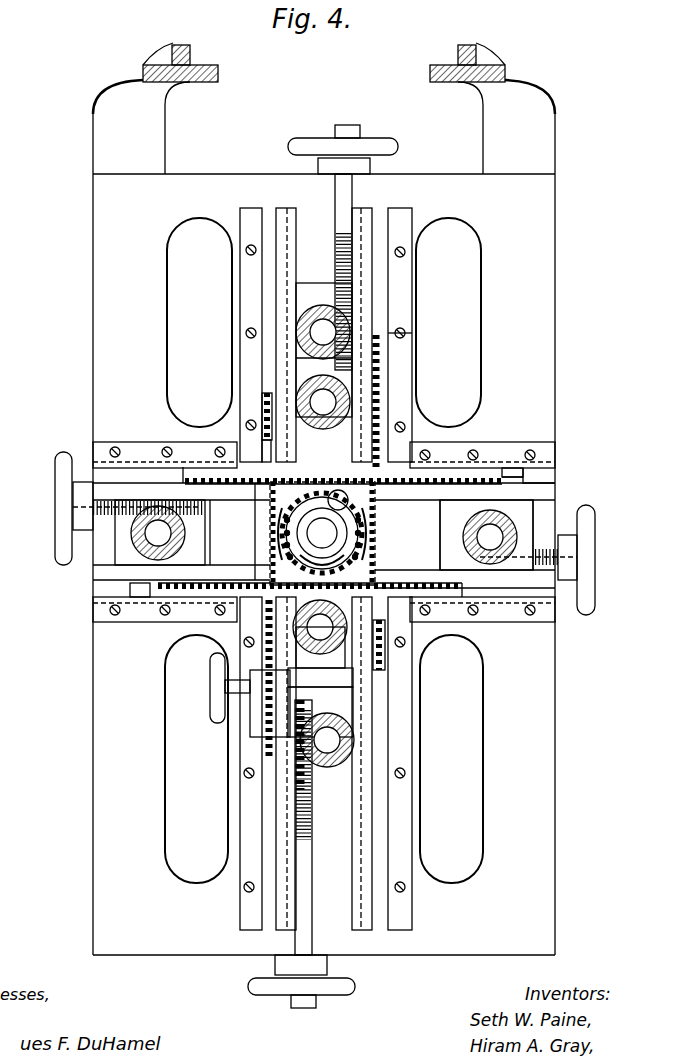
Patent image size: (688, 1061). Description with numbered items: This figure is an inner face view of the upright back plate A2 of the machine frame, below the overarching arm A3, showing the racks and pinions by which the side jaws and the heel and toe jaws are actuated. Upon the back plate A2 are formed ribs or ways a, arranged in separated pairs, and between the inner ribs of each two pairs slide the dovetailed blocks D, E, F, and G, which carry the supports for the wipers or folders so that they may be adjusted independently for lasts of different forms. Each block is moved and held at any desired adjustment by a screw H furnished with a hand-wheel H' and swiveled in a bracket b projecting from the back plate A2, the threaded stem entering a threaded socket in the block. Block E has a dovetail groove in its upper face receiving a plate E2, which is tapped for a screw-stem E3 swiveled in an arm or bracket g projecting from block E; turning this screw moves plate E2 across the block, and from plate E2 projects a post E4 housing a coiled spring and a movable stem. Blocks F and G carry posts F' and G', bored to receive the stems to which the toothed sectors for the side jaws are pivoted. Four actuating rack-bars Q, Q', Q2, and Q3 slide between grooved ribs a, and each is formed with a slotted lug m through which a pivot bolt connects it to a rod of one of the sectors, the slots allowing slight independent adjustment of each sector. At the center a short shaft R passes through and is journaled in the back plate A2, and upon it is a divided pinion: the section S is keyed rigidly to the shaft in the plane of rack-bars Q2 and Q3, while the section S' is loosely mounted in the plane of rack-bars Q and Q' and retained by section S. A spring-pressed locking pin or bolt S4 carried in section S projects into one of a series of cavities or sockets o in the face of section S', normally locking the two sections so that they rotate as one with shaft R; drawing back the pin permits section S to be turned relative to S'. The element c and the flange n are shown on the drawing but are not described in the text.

The upright back plate A2 is at (324, 533).
The overarching arm A3 is at (324, 108).
The ribs or ways a is at (324, 569).
The hand-wheel H' is at (322, 566).
The bracket b is at (318, 166).
The screw H is at (325, 564).
The block D is at (336, 376).
The lug m is at (262, 425).
The stop c is at (528, 479).
The actuating rack-bar Q2 is at (342, 468).
The actuating rack-bar Q3 is at (310, 593).
The actuating rack-bar Q is at (305, 533).
The actuating rack-bar Q' is at (465, 535).
The block F is at (181, 531).
The post F' is at (158, 532).
The block G is at (483, 534).
The post G' is at (486, 535).
The pinion section S is at (306, 533).
The pinion section S' is at (303, 534).
The locking pin or bolt S4 is at (340, 496).
The short shaft R is at (322, 533).
The hub flange n is at (322, 556).
The cavities or sockets o is at (378, 514).
The block E is at (321, 738).
The plate or block E2 is at (320, 676).
The screw-stem E3 is at (225, 688).
The post or standard E4 is at (320, 634).
The arm or bracket g is at (270, 680).